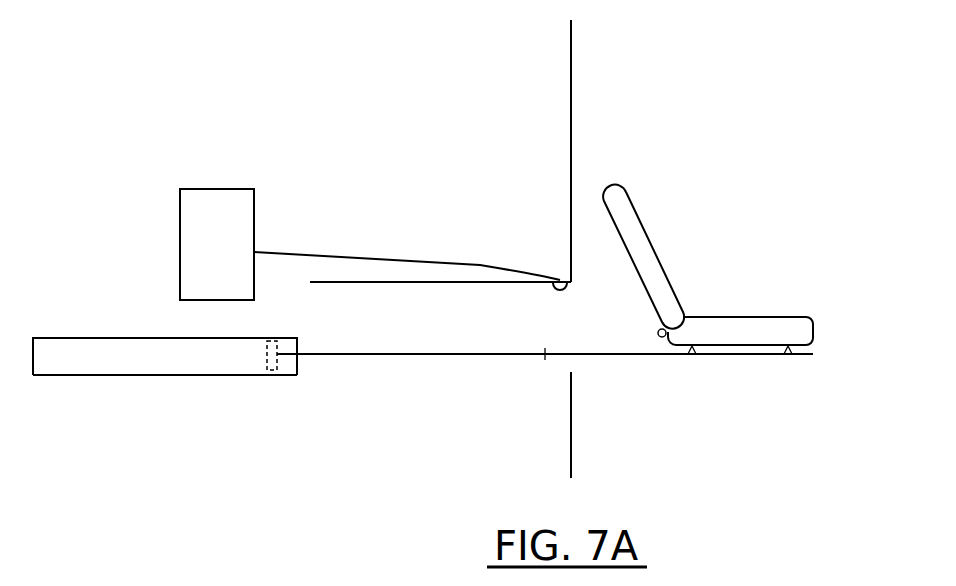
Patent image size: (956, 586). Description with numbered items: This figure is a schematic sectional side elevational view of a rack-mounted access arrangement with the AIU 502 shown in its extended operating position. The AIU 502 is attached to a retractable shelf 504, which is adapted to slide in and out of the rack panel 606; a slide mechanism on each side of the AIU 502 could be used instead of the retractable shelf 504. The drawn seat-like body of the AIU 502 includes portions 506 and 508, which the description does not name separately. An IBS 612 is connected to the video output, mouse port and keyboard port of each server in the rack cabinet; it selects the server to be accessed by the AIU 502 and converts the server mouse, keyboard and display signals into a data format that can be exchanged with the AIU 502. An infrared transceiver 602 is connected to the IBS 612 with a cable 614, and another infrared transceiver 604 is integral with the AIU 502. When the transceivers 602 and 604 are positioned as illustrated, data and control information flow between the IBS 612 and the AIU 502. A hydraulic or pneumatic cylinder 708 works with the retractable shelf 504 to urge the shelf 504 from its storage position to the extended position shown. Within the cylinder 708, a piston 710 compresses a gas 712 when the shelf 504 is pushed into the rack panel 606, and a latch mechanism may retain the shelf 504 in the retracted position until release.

The AIU 502 is at (748, 304).
The retractable shelf 504 is at (738, 354).
The seat back 506 is at (633, 210).
The seat cushion 508 is at (757, 317).
The infrared transceiver 602 is at (563, 292).
The infrared transceiver 604 is at (657, 330).
The rack panel 606 is at (571, 68).
The IBS 612 is at (217, 189).
The cable 614 is at (370, 258).
The hydraulic or pneumatic cylinder 708 is at (248, 375).
The piston 710 is at (268, 341).
The gas 712 is at (100, 375).